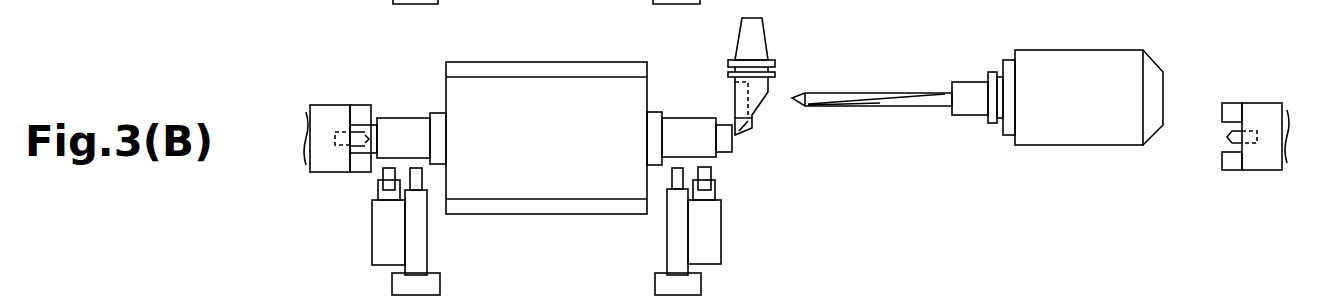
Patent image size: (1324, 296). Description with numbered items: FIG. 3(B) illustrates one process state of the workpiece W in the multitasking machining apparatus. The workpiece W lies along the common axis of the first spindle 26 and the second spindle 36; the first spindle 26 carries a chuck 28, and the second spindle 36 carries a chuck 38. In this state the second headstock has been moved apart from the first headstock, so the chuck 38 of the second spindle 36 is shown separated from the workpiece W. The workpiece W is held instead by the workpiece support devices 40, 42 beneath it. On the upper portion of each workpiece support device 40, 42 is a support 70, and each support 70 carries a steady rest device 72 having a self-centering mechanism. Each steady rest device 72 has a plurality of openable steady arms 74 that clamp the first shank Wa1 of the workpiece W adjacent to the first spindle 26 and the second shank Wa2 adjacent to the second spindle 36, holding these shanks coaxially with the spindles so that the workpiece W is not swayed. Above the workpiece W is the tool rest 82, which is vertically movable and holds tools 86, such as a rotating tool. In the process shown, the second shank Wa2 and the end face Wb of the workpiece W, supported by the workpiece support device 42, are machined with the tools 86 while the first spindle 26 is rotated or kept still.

The first spindle 26 is at (308, 113).
The chuck 28 is at (344, 105).
The second spindle 36 is at (1284, 105).
The chuck 38 is at (1258, 103).
The workpiece support device 40 is at (523, 231).
The workpiece support device 42 is at (768, 224).
The support 70 is at (427, 250).
The steady rest device 72 is at (372, 248).
The steady arms 74 is at (378, 186).
The tool rest 82 is at (1050, 50).
The tool 86 is at (770, 92).
The workpiece W is at (541, 63).
The first shank Wa1 is at (406, 118).
The second shank Wa2 is at (694, 120).
The end face Wb is at (648, 90).